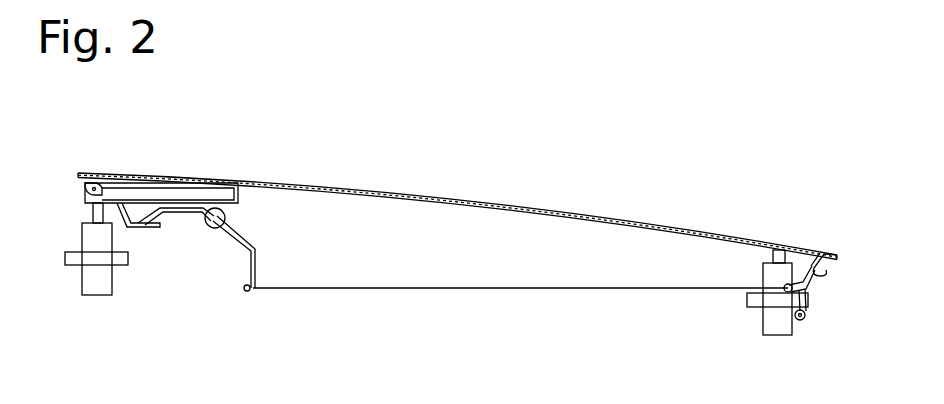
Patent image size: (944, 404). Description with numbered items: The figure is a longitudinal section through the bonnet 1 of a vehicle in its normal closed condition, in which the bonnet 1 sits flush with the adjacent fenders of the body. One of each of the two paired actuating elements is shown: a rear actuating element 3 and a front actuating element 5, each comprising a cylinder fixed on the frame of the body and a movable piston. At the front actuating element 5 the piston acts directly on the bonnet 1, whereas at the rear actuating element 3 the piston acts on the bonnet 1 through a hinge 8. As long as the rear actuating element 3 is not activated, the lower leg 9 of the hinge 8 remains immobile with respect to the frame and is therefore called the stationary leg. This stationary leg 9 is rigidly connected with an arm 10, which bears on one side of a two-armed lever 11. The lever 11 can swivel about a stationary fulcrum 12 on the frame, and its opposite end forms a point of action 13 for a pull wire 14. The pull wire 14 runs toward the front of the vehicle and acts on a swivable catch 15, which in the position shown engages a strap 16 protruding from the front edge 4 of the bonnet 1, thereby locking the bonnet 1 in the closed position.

The bonnet 1 is at (477, 198).
The rear actuating element 3 is at (85, 283).
The front edge 4 is at (829, 253).
The front actuating element 5 is at (759, 331).
The hinge 8 is at (101, 166).
The lower leg 9 is at (180, 198).
The arm 10 is at (133, 228).
The two-armed lever 11 is at (241, 232).
The stationary fulcrum 12 is at (208, 224).
The point of action 13 is at (253, 290).
The pull wire 14 is at (502, 290).
The swivable catch 15 is at (810, 283).
The strap 16 is at (810, 252).